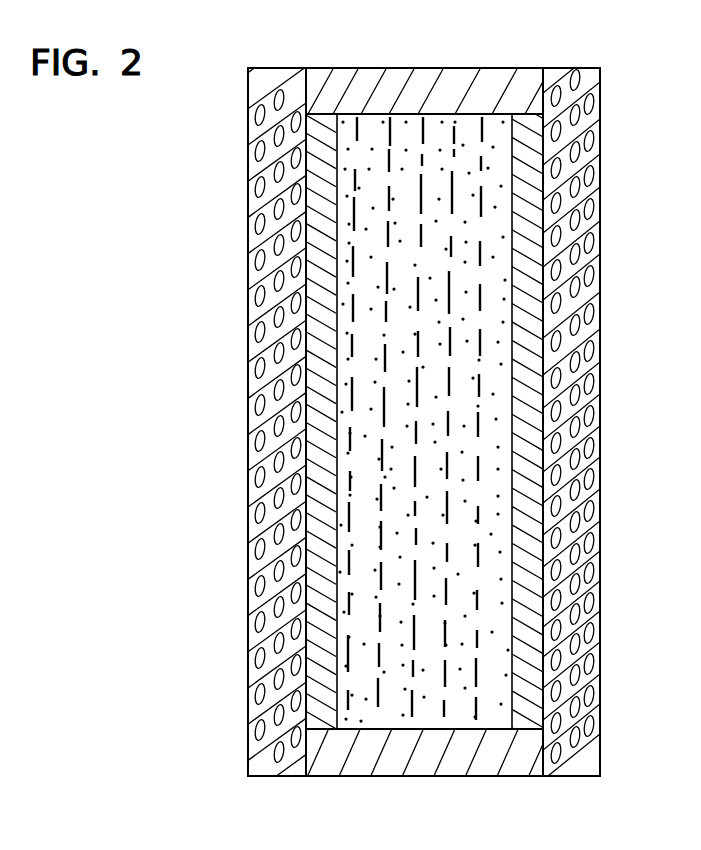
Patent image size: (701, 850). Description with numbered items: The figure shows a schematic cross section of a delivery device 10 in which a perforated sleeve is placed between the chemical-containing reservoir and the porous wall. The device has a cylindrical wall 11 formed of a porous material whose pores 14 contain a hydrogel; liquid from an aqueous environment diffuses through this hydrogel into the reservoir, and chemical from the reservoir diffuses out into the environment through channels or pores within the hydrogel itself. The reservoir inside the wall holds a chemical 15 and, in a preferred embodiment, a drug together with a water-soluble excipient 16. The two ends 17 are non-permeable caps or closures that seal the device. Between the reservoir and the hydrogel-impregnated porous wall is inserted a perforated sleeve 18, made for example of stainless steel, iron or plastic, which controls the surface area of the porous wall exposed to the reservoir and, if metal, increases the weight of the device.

The delivery device 10 is at (605, 200).
The cylindrical wall 11 is at (418, 414).
The pores 14 is at (248, 452).
The chemical 15 is at (500, 585).
The water-soluble excipient 16 is at (356, 155).
The ends 17 is at (378, 78).
The perforated sleeve 18 is at (323, 358).